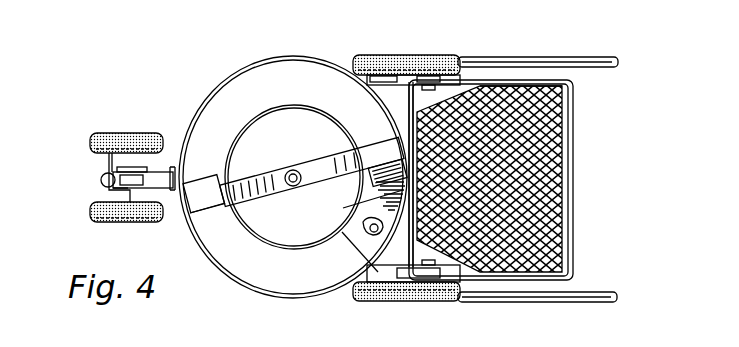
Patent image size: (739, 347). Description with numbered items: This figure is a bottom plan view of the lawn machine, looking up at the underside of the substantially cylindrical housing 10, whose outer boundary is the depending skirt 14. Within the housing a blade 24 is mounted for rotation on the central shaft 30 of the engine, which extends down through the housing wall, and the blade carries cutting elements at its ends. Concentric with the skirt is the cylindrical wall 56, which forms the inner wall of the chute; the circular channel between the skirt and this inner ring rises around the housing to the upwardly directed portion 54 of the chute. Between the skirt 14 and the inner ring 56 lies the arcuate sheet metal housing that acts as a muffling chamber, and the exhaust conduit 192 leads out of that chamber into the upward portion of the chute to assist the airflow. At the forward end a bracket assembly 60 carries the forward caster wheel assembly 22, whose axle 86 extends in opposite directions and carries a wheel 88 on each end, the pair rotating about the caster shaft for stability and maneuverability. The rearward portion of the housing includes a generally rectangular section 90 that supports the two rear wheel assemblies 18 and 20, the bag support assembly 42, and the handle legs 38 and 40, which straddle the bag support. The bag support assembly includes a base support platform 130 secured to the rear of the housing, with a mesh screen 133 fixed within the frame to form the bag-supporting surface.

The housing 10 is at (220, 82).
The skirt 14 is at (328, 62).
The rear wheel assembly 18 is at (428, 54).
The rear wheel assembly 20 is at (364, 303).
The forward caster wheel assembly 22 is at (103, 170).
The blade 24 is at (205, 212).
The central shaft 30 is at (292, 170).
The handle leg 38 is at (583, 58).
The handle leg 40 is at (598, 300).
The bag support assembly 42 is at (575, 129).
The upwardly directed portion of the chute 54 is at (350, 243).
The cylindrical wall 56 is at (248, 232).
The bracket assembly 60 is at (173, 166).
The axle 86 is at (108, 191).
The wheel 88 is at (108, 133).
The rectangular section 90 is at (418, 258).
The base support platform 130 is at (572, 235).
The mesh screen 133 is at (553, 183).
The exhaust conduit 192 is at (363, 222).